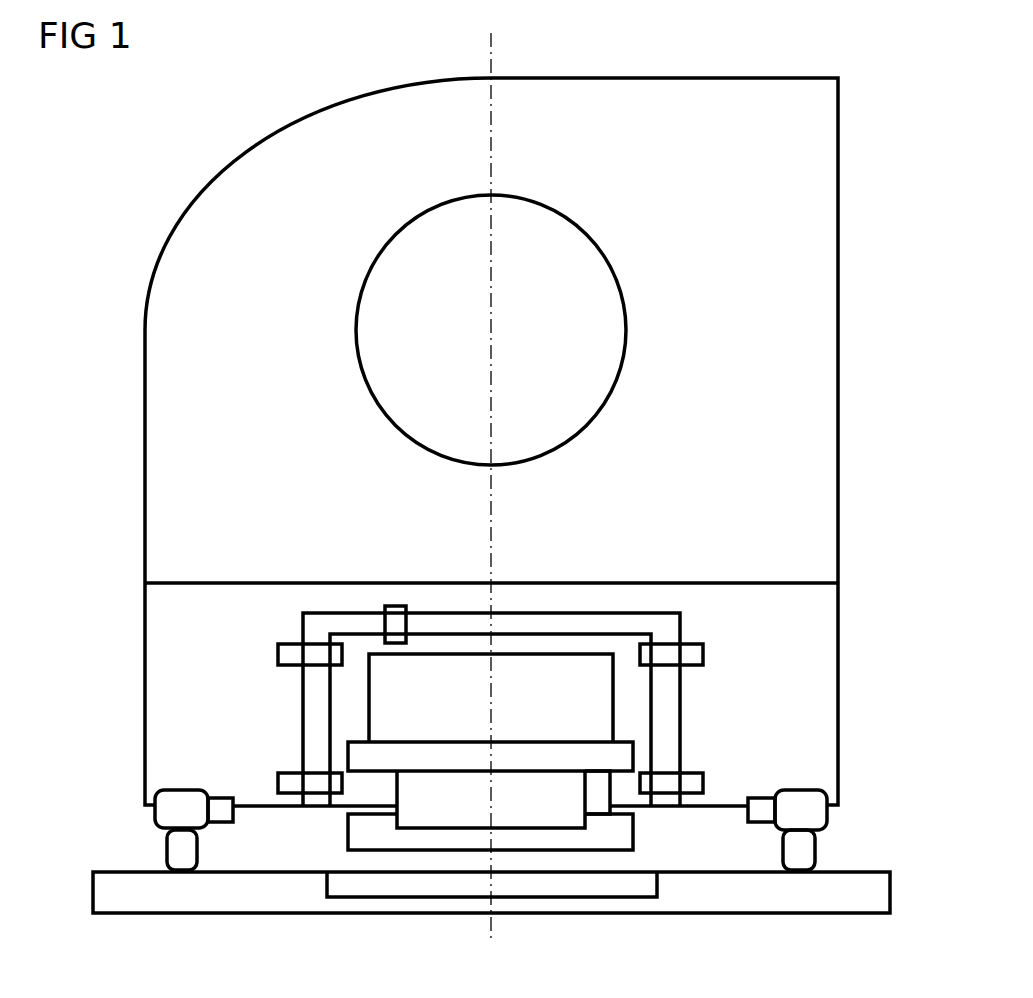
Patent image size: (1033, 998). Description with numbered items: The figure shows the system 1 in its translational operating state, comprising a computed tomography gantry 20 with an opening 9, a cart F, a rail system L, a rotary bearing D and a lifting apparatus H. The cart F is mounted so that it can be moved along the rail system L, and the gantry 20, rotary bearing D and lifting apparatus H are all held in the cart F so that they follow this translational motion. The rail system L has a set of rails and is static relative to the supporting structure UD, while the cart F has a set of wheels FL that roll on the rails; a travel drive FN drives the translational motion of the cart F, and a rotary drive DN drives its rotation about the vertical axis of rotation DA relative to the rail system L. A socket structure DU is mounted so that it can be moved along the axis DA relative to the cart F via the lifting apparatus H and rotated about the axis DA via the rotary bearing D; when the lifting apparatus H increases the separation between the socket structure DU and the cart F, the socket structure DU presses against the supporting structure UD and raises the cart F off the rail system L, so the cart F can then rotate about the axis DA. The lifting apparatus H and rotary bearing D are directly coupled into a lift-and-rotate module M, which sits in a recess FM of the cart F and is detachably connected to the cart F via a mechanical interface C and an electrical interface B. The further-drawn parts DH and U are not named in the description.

The system 1 is at (173, 163).
The computed tomography gantry 20 is at (232, 163).
The opening 9 is at (550, 341).
The vertical axis of rotation DA is at (483, 65).
The cart F is at (165, 696).
The lift-and-rotate module M is at (348, 697).
The recess FM is at (667, 708).
The mechanical interface C is at (292, 653).
The electrical interface B is at (397, 615).
The lifting apparatus H is at (533, 702).
The holder plate DH is at (390, 753).
The rotary bearing D is at (443, 800).
The rotary drive DN is at (595, 798).
The socket structure DU is at (620, 833).
The base U is at (128, 897).
The supporting structure UD is at (348, 883).
The set of wheels FL is at (165, 817).
The travel drive FN is at (223, 813).
The rail system L is at (177, 857).